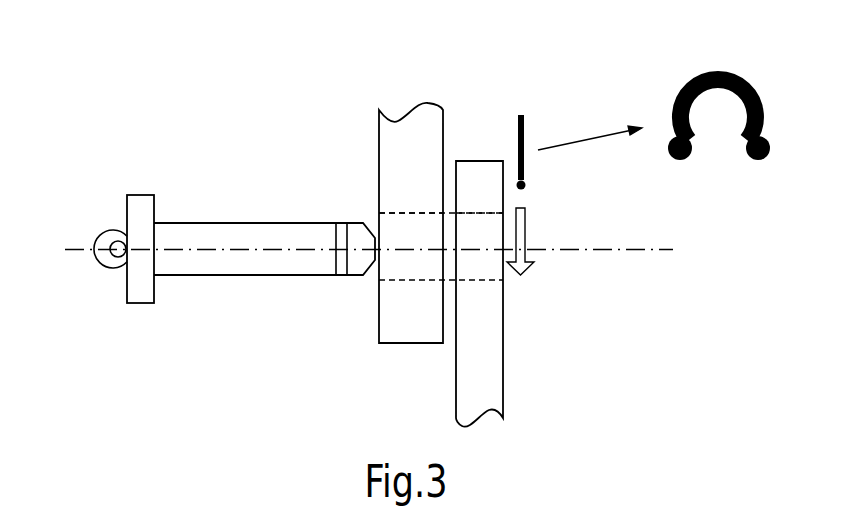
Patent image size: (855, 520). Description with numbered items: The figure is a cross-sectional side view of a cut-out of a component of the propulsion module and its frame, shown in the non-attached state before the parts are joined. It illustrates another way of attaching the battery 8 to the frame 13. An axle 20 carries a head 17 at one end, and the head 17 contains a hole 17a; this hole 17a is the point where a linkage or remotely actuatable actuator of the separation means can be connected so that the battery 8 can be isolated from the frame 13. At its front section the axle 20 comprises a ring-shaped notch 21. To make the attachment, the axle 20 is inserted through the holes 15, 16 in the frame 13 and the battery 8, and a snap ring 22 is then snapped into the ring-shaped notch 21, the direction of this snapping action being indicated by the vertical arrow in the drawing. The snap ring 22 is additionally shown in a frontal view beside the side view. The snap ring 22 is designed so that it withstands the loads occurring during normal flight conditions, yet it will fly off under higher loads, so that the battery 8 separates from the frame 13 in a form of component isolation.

The battery 8 is at (503, 385).
The frame 13 is at (410, 344).
The hole 15 is at (408, 213).
The hole 16 is at (470, 213).
The head 17 is at (140, 305).
The hole 17a is at (110, 270).
The axle 20 is at (247, 277).
The ring-shaped notch 21 is at (340, 222).
The snap ring 22 is at (522, 108).